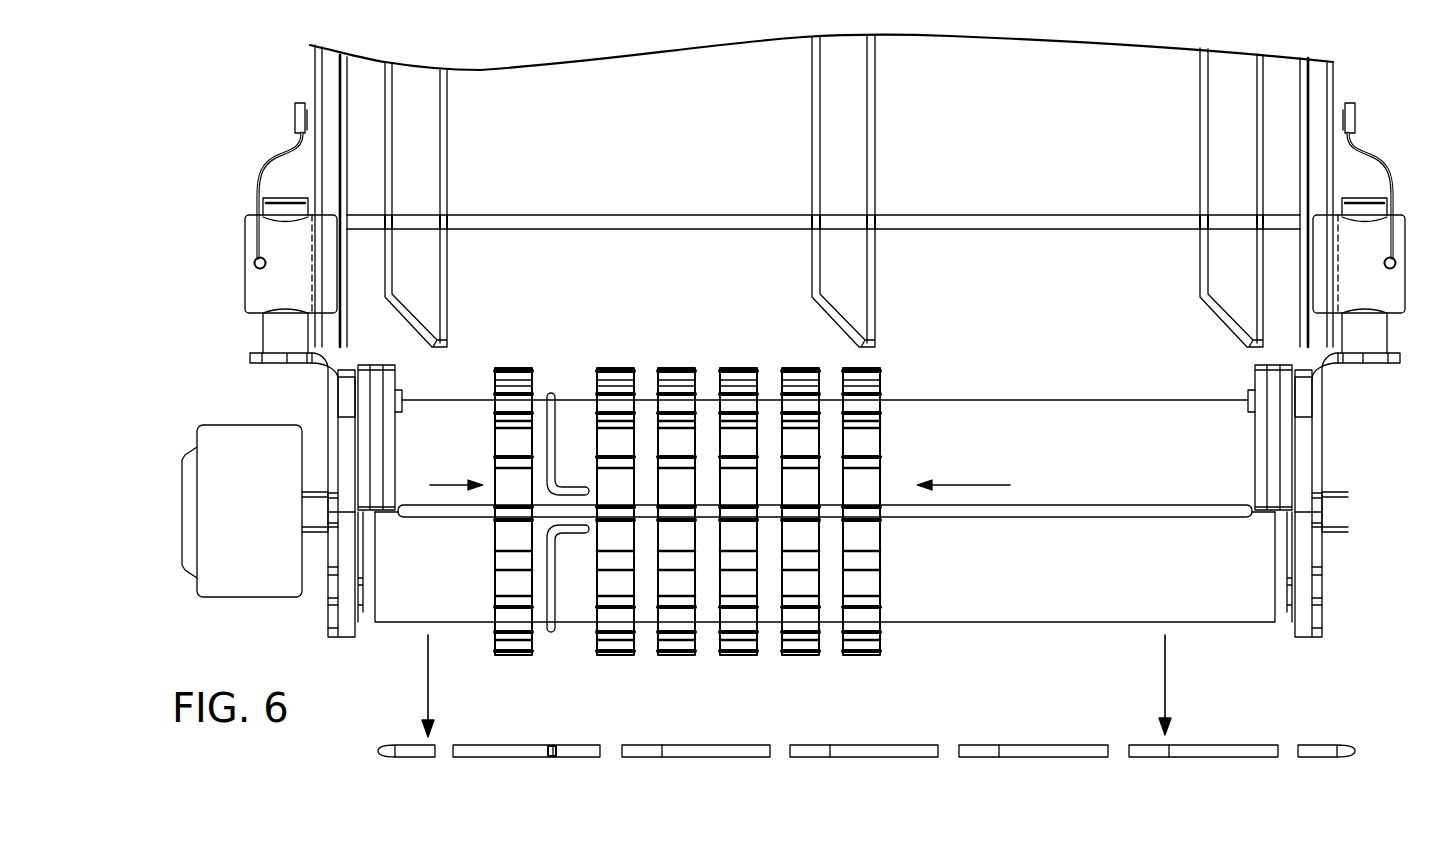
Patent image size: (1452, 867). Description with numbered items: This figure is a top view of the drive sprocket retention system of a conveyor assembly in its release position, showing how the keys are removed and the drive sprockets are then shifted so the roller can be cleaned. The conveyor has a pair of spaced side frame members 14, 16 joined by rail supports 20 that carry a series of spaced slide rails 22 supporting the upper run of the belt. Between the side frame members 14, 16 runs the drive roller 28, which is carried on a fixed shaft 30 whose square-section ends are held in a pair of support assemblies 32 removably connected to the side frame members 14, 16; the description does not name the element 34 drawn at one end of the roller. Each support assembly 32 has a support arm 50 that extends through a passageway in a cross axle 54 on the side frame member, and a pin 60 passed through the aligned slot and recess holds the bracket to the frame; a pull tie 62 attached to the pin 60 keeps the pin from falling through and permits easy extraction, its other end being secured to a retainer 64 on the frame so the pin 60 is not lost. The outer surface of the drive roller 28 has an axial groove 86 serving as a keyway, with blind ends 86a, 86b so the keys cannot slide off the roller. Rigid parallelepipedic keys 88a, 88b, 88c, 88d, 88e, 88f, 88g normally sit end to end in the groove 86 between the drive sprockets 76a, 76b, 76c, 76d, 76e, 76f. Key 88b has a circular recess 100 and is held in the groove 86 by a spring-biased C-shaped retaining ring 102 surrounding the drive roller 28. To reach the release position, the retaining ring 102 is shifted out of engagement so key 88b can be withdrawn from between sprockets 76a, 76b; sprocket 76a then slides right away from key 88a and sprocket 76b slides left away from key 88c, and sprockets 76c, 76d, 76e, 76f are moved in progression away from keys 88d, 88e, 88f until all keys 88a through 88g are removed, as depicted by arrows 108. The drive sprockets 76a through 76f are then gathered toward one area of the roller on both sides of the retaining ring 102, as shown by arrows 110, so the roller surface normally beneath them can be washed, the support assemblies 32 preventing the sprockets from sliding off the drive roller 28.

The side frame member 14 is at (324, 68).
The side frame member 16 is at (1335, 82).
The rail support 20 is at (1036, 214).
The slide rail 22 is at (856, 138).
The drive roller 28 is at (1022, 610).
The fixed shaft 30 is at (1345, 512).
The support assembly 32 is at (331, 626).
The motor 34 is at (255, 436).
The support arm 50 is at (272, 328).
The cross axle 54 is at (270, 288).
The pin 60 is at (254, 262).
The pull tie 62 is at (258, 186).
The retainer 64 is at (296, 120).
The drive sprocket 76a is at (516, 657).
The drive sprocket 76b is at (618, 657).
The drive sprocket 76c is at (680, 657).
The drive sprocket 76d is at (741, 657).
The drive sprocket 76e is at (803, 657).
The drive sprocket 76f is at (866, 657).
The axial groove 86 is at (823, 536).
The blind end 86a is at (399, 518).
The blind end 86b is at (1245, 518).
The key 88a is at (406, 758).
The key 88b is at (526, 755).
The key 88c is at (697, 758).
The key 88d is at (866, 758).
The key 88e is at (1035, 758).
The key 88f is at (1205, 758).
The key 88g is at (1327, 758).
The circular recess 100 is at (550, 751).
The retaining ring 102 is at (552, 393).
The arrows 108 is at (427, 683).
The arrows 110 is at (458, 485).